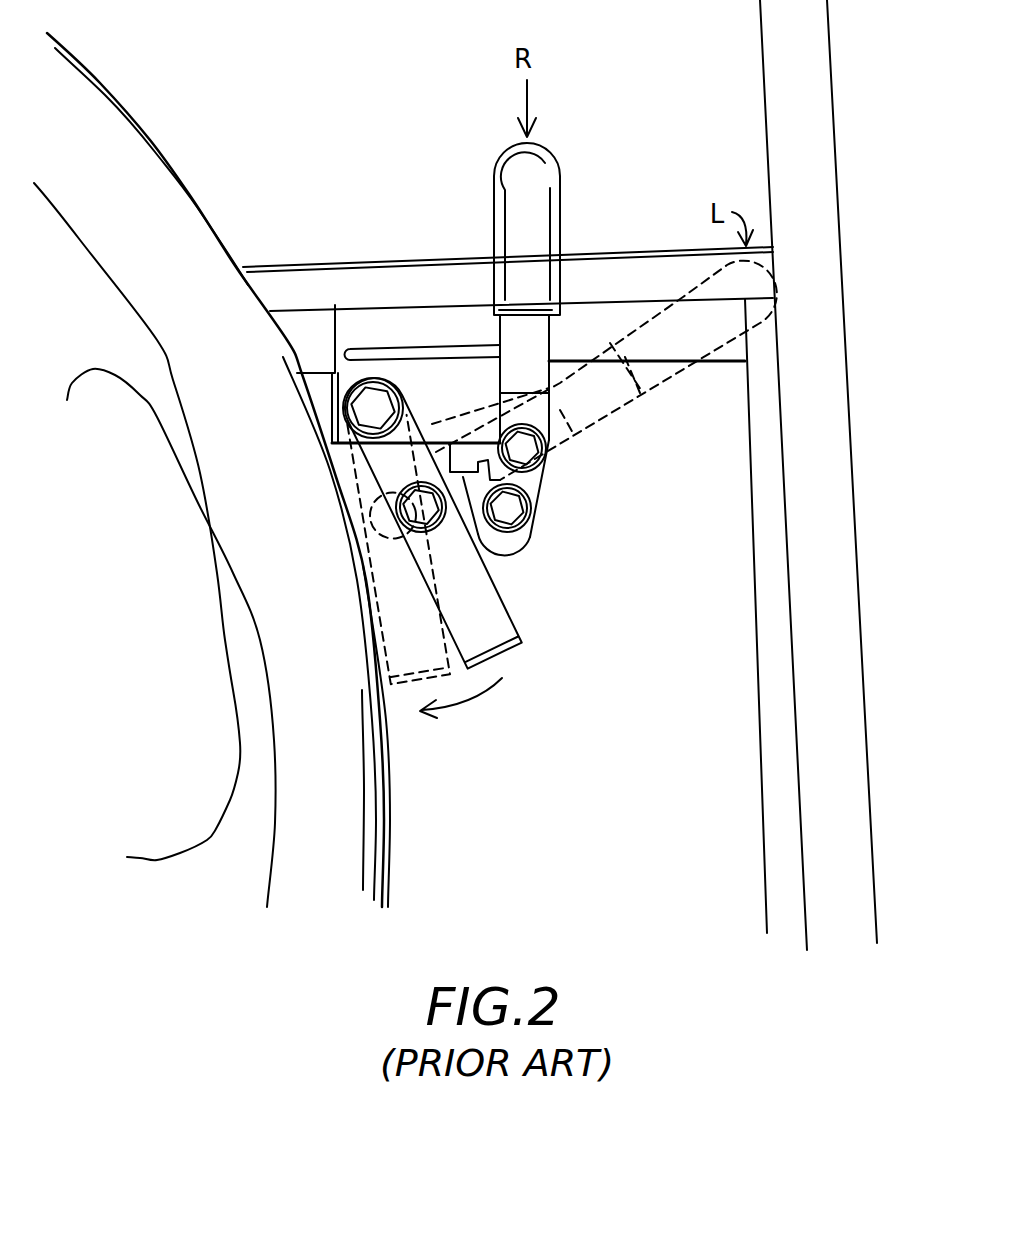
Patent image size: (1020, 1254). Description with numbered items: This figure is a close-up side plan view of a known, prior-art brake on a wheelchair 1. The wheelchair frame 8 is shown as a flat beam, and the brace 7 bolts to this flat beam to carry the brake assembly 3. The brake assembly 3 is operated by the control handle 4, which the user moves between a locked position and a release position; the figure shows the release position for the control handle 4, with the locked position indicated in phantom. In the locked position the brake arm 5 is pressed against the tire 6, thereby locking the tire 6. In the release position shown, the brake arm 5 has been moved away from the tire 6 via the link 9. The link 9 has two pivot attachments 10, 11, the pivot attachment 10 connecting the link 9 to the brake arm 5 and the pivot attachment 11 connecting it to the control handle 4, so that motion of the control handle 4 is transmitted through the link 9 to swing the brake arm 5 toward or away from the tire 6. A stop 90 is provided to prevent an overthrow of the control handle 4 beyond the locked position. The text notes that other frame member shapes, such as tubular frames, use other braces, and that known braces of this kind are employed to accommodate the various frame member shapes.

The wheelchair 1 is at (255, 100).
The brake assembly 3 is at (624, 485).
The control handle 4 is at (544, 184).
The brake arm 5 is at (482, 598).
The tire 6 is at (354, 847).
The brace 7 is at (395, 320).
The wheelchair frame 8 is at (317, 330).
The link 9 is at (513, 532).
The pivot attachment 10 is at (396, 514).
The pivot attachment 11 is at (512, 507).
The stop 90 is at (464, 478).